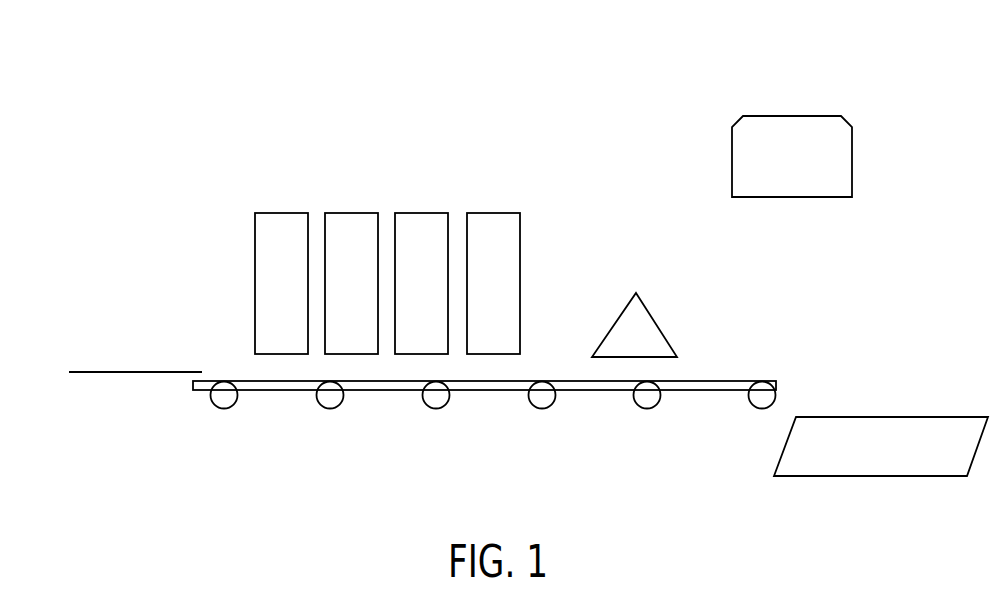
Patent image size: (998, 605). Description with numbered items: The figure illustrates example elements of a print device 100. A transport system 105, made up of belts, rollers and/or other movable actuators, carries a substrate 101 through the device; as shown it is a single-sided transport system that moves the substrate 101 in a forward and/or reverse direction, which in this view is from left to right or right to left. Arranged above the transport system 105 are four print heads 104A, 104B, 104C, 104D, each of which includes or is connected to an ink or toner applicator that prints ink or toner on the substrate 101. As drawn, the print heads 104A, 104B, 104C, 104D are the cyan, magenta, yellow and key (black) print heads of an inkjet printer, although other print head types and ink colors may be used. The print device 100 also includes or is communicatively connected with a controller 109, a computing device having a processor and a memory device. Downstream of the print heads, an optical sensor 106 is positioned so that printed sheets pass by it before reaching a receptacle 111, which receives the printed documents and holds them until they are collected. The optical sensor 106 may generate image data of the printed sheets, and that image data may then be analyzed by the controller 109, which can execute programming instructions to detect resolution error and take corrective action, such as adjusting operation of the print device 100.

The print device 100 is at (205, 105).
The substrate 101 is at (137, 375).
The print head 104A is at (280, 212).
The print head 104B is at (352, 212).
The print head 104C is at (422, 212).
The print head 104D is at (494, 212).
The transport system 105 is at (786, 368).
The optical sensor 106 is at (658, 322).
The controller 109 is at (823, 116).
The receptacle 111 is at (946, 417).